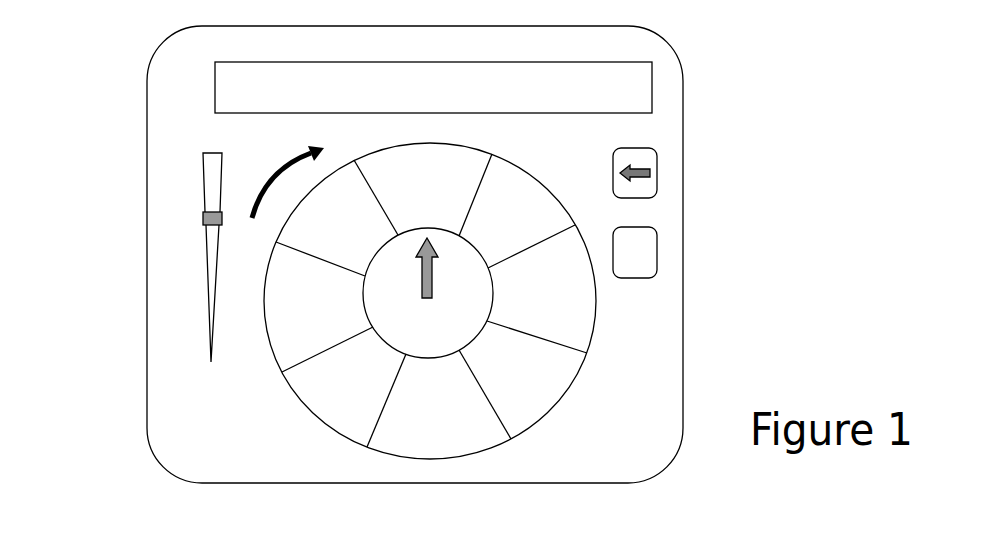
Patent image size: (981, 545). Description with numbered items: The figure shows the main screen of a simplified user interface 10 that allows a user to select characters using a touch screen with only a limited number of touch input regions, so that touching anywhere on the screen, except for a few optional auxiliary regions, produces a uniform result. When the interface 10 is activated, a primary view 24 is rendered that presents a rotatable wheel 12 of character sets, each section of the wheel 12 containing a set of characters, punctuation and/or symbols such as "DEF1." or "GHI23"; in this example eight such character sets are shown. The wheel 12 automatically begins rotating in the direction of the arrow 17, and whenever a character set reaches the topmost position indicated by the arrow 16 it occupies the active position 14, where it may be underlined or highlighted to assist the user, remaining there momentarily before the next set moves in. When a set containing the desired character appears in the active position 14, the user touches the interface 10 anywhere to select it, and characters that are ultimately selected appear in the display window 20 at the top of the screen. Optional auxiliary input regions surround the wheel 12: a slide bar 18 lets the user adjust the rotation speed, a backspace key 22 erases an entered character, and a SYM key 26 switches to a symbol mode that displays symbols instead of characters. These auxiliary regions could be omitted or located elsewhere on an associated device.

The simplified user interface 10 is at (756, 180).
The wheel 12 is at (582, 372).
The active position 14 is at (465, 158).
The arrow 16 is at (428, 293).
The arrow 17 is at (283, 163).
The slide bar 18 is at (205, 277).
The display window 20 is at (610, 102).
The backspace key 22 is at (652, 198).
The primary view 24 is at (205, 422).
The auxiliary input region 26 is at (657, 267).